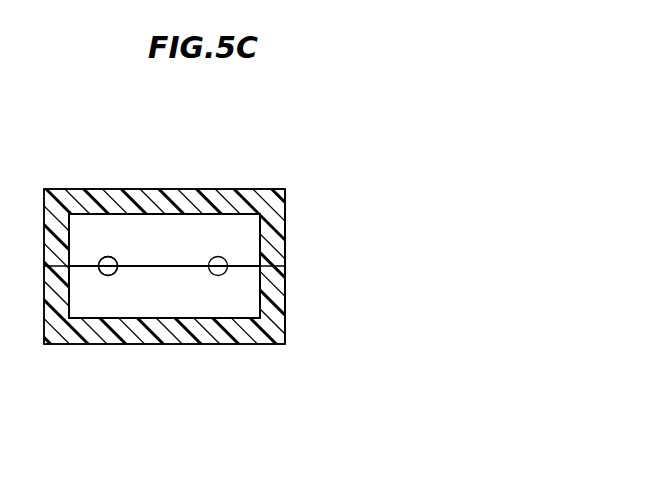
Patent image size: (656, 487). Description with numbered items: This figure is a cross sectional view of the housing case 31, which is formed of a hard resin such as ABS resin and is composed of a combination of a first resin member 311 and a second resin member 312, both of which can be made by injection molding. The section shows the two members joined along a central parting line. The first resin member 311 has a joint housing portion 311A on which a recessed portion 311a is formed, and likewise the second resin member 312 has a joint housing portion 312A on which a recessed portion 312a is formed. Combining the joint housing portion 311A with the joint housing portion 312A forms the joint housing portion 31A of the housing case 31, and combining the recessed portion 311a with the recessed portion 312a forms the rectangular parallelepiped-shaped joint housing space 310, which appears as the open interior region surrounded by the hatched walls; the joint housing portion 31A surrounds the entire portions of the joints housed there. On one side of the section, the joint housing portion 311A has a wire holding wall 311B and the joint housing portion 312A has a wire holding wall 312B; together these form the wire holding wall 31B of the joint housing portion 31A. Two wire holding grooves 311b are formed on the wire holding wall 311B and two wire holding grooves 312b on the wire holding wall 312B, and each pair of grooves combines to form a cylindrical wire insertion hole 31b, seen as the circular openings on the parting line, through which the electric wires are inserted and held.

The housing case 31 is at (160, 138).
The joint housing space 310 is at (288, 133).
The first resin member 311 is at (87, 190).
The second resin member 312 is at (87, 344).
The recessed portion 311a is at (224, 218).
The recessed portion 312a is at (241, 273).
The wire insertion hole 31b is at (214, 257).
The wire holding groove 311b is at (113, 275).
The wire holding groove 312b is at (103, 275).
The joint housing portion 311A is at (285, 252).
The joint housing portion 312A is at (285, 279).
The joint housing portion 31A is at (368, 240).
The wire holding wall 311B is at (187, 257).
The wire holding wall 312B is at (187, 310).
The wire holding wall 31B is at (260, 353).